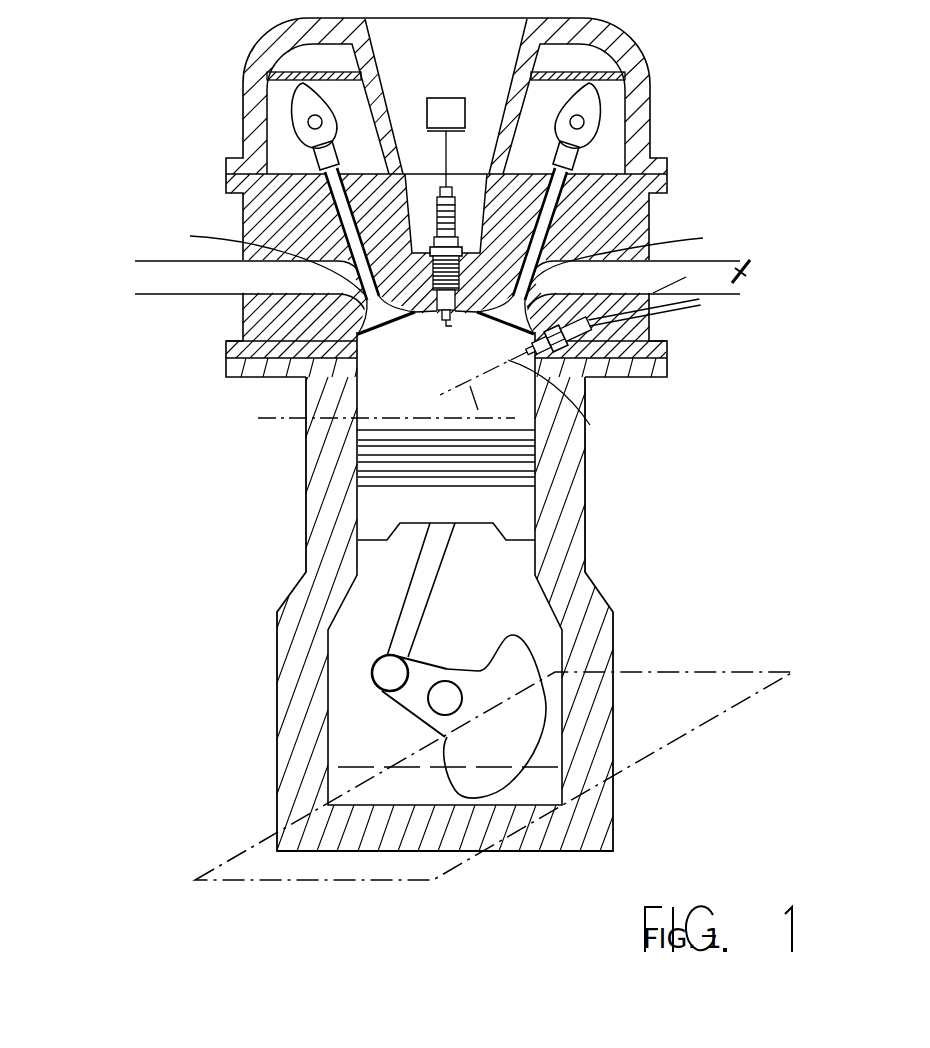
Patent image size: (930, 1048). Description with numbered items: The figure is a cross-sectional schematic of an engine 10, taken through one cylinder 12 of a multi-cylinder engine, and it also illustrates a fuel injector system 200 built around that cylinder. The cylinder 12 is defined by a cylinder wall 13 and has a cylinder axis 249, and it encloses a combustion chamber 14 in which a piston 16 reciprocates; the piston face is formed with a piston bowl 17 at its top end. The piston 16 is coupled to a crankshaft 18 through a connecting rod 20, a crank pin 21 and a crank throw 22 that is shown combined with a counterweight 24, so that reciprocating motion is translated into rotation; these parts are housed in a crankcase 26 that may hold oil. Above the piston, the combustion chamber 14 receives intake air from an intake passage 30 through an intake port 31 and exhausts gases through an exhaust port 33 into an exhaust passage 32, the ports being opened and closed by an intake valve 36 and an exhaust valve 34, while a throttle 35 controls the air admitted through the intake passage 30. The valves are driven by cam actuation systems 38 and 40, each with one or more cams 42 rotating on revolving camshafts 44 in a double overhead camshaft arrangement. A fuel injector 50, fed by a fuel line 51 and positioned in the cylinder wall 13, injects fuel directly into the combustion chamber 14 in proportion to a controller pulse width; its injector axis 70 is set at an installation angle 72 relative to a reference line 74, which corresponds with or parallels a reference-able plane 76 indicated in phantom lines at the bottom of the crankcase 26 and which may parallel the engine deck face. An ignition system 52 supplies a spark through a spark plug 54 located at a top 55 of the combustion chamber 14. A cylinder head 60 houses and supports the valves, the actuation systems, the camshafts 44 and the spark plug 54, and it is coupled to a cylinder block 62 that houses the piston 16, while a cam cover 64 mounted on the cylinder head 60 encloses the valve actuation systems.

The engine 10 is at (90, 688).
The cylinder 12 is at (357, 384).
The cylinder wall 13 is at (528, 571).
The combustion chamber 14 is at (487, 347).
The piston 16 is at (467, 514).
The piston bowl 17 is at (353, 425).
The crankshaft 18 is at (447, 680).
The connecting rod 20 is at (398, 612).
The crank pin 21 is at (392, 690).
The crank throw 22 is at (420, 722).
The counterweight 24 is at (492, 795).
The crankcase 26 is at (435, 803).
The intake passage 30 is at (655, 291).
The intake port 31 is at (633, 264).
The exhaust passage 32 is at (284, 291).
The exhaust port 33 is at (262, 269).
The exhaust valve 34 is at (353, 189).
The throttle 35 is at (742, 266).
The intake valve 36 is at (538, 190).
The cam actuation system 38 is at (308, 150).
The cam actuation system 40 is at (584, 150).
The cam 42 is at (328, 95).
The camshaft 44 is at (326, 122).
The fuel injector 50 is at (527, 356).
The fuel line 51 is at (673, 310).
The ignition system 52 is at (446, 142).
The spark plug 54 is at (453, 203).
The top of the combustion chamber 55 is at (360, 338).
The cylinder head 60 is at (650, 205).
The cylinder block 62 is at (590, 585).
The cam cover 64 is at (652, 134).
The injector axis 70 is at (598, 426).
The installation angle 72 is at (540, 398).
The reference line 74 is at (365, 420).
The reference-able plane 76 is at (672, 672).
The fuel injector system 200 is at (125, 95).
The cylinder axis 249 is at (360, 768).